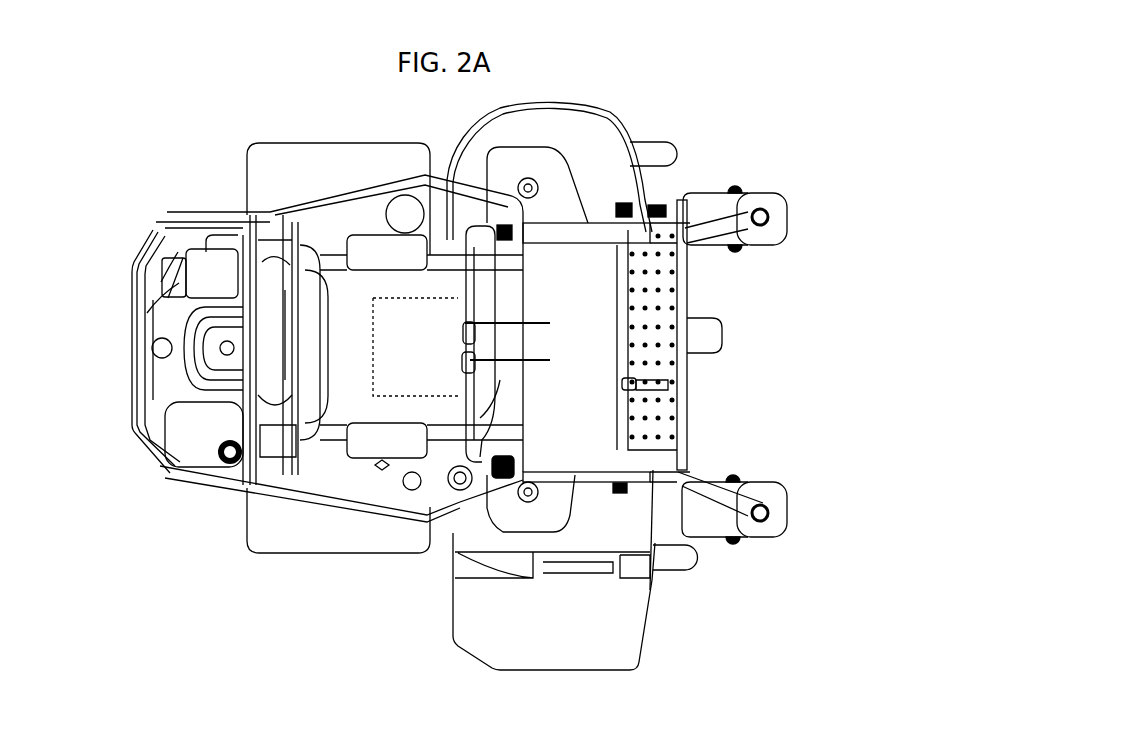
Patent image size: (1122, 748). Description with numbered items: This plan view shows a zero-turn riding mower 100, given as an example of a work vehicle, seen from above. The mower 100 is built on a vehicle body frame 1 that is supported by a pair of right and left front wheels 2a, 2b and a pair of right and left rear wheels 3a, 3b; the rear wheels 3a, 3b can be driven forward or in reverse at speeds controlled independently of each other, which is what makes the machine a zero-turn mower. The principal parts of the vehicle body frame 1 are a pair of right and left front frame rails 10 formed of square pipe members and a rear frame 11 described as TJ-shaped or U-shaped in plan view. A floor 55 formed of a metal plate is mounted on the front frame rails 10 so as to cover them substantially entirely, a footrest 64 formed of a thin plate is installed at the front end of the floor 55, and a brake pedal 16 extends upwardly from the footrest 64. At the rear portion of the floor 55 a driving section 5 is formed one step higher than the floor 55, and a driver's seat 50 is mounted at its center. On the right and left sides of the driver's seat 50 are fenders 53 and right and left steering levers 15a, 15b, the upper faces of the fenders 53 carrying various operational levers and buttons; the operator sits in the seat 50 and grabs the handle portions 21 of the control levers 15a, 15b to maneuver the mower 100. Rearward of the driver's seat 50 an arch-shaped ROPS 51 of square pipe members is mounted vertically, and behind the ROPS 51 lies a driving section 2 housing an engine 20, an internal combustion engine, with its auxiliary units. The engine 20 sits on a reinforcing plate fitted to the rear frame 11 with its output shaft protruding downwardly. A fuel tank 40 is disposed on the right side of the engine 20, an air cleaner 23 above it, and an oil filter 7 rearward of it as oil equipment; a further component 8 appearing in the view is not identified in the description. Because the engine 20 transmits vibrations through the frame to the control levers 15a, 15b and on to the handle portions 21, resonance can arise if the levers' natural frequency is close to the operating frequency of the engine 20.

The zero-turn riding mower 100 is at (736, 140).
The vehicle body frame 1 is at (742, 378).
The driving section 2 is at (122, 292).
The front wheel 2a is at (784, 205).
The front wheel 2b is at (787, 517).
The rear wheel 3a is at (310, 143).
The rear wheel 3b is at (305, 553).
The driving section 5 is at (508, 298).
The oil filter 7 is at (612, 113).
The cover 8 is at (160, 381).
The front frame rails 10 is at (592, 232).
The rear frame 11 is at (145, 447).
The steering lever 15a is at (463, 332).
The steering lever 15b is at (462, 365).
The brake pedal 16 is at (667, 386).
The engine 20 is at (147, 311).
The handle portions 21 is at (526, 345).
The air cleaner 23 is at (194, 228).
The fuel tank 40 is at (188, 453).
The driver's seat 50 is at (495, 398).
The ROPS 51 is at (247, 232).
The fenders 53 is at (375, 205).
The floor 55 is at (672, 411).
The footrest 64 is at (682, 287).